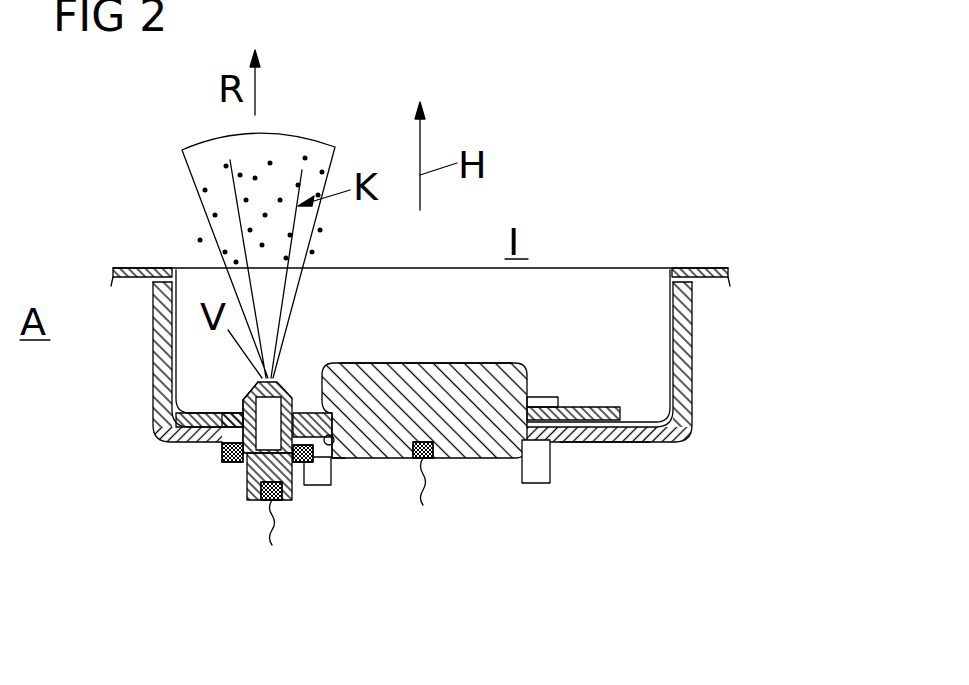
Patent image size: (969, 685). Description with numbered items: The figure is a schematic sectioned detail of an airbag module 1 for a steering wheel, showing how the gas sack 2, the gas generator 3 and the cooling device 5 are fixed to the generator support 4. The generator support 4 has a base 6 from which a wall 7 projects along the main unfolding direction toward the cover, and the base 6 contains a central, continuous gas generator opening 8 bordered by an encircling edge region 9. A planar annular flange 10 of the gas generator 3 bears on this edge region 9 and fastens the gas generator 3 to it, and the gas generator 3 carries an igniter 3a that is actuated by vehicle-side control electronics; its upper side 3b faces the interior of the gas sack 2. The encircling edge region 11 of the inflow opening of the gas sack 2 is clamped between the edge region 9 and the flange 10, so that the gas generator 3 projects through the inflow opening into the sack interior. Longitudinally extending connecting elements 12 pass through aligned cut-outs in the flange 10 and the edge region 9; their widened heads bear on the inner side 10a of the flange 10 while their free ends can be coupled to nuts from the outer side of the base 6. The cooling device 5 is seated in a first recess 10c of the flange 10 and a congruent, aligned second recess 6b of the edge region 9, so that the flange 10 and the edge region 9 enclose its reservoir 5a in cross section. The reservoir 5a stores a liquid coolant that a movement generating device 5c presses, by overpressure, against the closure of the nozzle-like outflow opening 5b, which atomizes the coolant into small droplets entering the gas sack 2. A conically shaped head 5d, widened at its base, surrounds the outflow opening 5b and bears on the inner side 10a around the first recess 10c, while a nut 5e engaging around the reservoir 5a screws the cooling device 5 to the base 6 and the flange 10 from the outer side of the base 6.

The airbag module 1 is at (724, 302).
The gas sack 2 is at (697, 268).
The gas generator 3 is at (490, 445).
The igniter 3a is at (428, 458).
The upper side 3b is at (417, 362).
The generator support 4 is at (690, 423).
The cooling device 5 is at (250, 480).
The reservoir 5a is at (247, 456).
The outflow opening 5b is at (273, 383).
The movement generating device 5c is at (265, 498).
The head 5d is at (256, 398).
The nut 5e is at (235, 460).
The base 6 is at (642, 441).
The second recess 6b is at (302, 465).
The wall 7 is at (155, 342).
The gas generator opening 8 is at (340, 458).
The edge region 9 is at (568, 441).
The flange 10 is at (585, 412).
The inner side 10a is at (565, 403).
The first recess 10c is at (185, 428).
The edge region of the inflow opening 11 is at (225, 432).
The connecting elements 12 is at (318, 478).